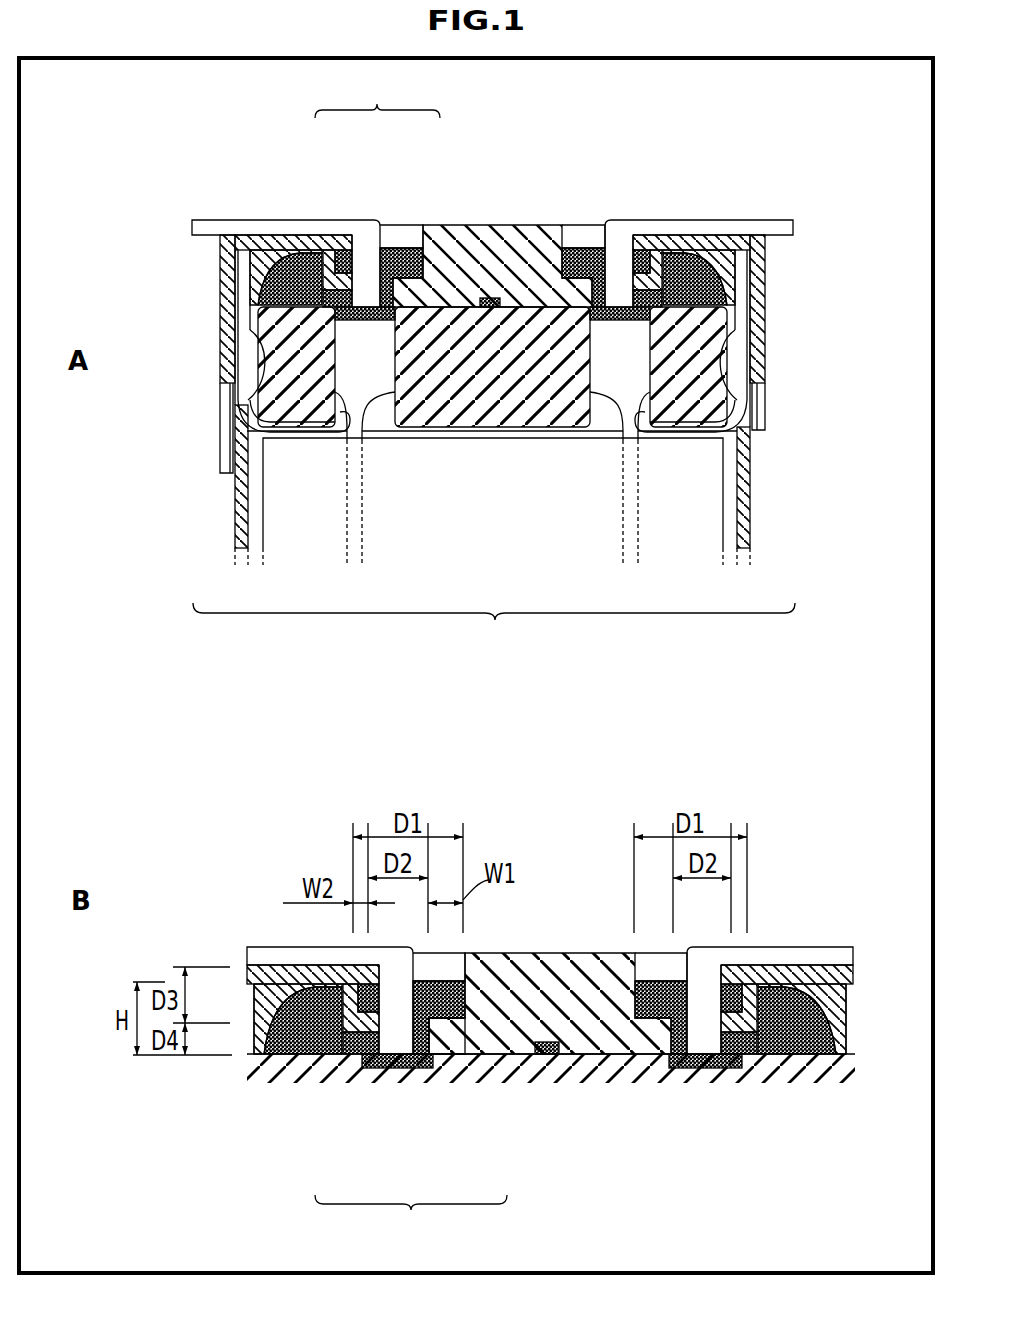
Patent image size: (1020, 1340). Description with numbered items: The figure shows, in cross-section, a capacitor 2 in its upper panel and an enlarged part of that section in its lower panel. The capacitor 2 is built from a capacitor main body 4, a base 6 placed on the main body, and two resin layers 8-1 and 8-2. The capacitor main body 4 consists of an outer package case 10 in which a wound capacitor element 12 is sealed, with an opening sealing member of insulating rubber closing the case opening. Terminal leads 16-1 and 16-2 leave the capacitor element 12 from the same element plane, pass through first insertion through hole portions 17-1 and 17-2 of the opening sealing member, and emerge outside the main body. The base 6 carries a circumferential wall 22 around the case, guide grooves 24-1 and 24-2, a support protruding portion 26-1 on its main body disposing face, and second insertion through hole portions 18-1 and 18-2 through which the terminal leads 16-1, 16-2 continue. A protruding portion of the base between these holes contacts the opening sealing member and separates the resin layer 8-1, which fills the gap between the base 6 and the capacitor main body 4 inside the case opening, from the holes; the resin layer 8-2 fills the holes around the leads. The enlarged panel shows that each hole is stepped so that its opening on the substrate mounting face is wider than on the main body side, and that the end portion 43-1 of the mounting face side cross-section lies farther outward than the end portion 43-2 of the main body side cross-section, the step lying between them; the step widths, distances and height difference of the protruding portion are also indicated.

The capacitor 2 is at (494, 629).
The capacitor main body 4 is at (778, 470).
The base 6 is at (782, 338).
The resin layer 8-1 is at (672, 262).
The resin layer 8-2 is at (578, 250).
The outer package case 10 is at (751, 532).
The capacitor element 12 is at (725, 500).
The terminal lead 16-1 is at (773, 219).
The terminal lead 16-2 is at (212, 219).
The first insertion through hole portion 17-1 is at (665, 428).
The first insertion through hole portion 17-2 is at (344, 432).
The second insertion through hole portion 18-1 is at (633, 240).
The second insertion through hole portion 18-2 is at (352, 240).
The circumferential wall 22 is at (220, 340).
The guide groove 24-1 is at (761, 246).
The guide groove 24-2 is at (224, 246).
The support protruding portion 26-1 is at (746, 302).
The end portion of the mounting face side cross-section 43-1 is at (462, 957).
The end portion of the main body side cross-section 43-2 is at (416, 1062).